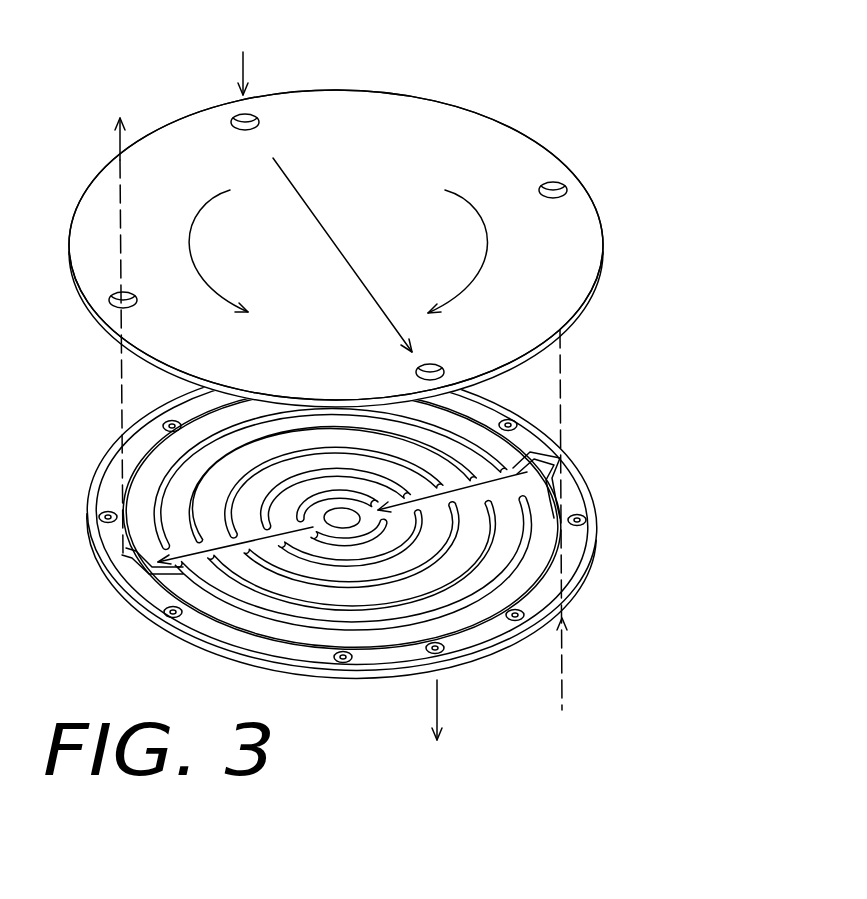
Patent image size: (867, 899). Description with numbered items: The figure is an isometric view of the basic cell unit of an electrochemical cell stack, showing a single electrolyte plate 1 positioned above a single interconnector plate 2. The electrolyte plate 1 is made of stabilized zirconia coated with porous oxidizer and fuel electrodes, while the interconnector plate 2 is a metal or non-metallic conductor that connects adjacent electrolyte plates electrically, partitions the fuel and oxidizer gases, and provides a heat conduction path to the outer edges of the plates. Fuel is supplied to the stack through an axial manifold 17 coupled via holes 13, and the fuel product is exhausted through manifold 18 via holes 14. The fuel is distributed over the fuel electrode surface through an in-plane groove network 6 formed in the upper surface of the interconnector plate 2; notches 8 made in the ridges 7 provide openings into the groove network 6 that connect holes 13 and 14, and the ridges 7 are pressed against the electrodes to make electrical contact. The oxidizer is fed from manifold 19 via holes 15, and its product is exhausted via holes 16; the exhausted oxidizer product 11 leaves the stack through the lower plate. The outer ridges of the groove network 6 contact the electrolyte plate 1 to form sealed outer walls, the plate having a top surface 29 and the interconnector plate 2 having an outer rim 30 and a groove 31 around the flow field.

The electrolyte plate 1 is at (585, 175).
The interconnector plate 2 is at (617, 487).
The in-plane groove network 6 is at (150, 482).
The ridges 7 is at (312, 608).
The notches 8 is at (515, 468).
The oxidizer product outlet 11 is at (500, 728).
The holes 13 is at (545, 183).
The holes 14 is at (126, 296).
The holes 15 is at (262, 120).
The holes 16 is at (419, 660).
The manifold 17 is at (651, 520).
The manifold 18 is at (125, 308).
The manifold 19 is at (261, 48).
The top surface of plate 29 is at (380, 92).
The outer rim 30 is at (590, 525).
The sealing groove 31 is at (576, 548).